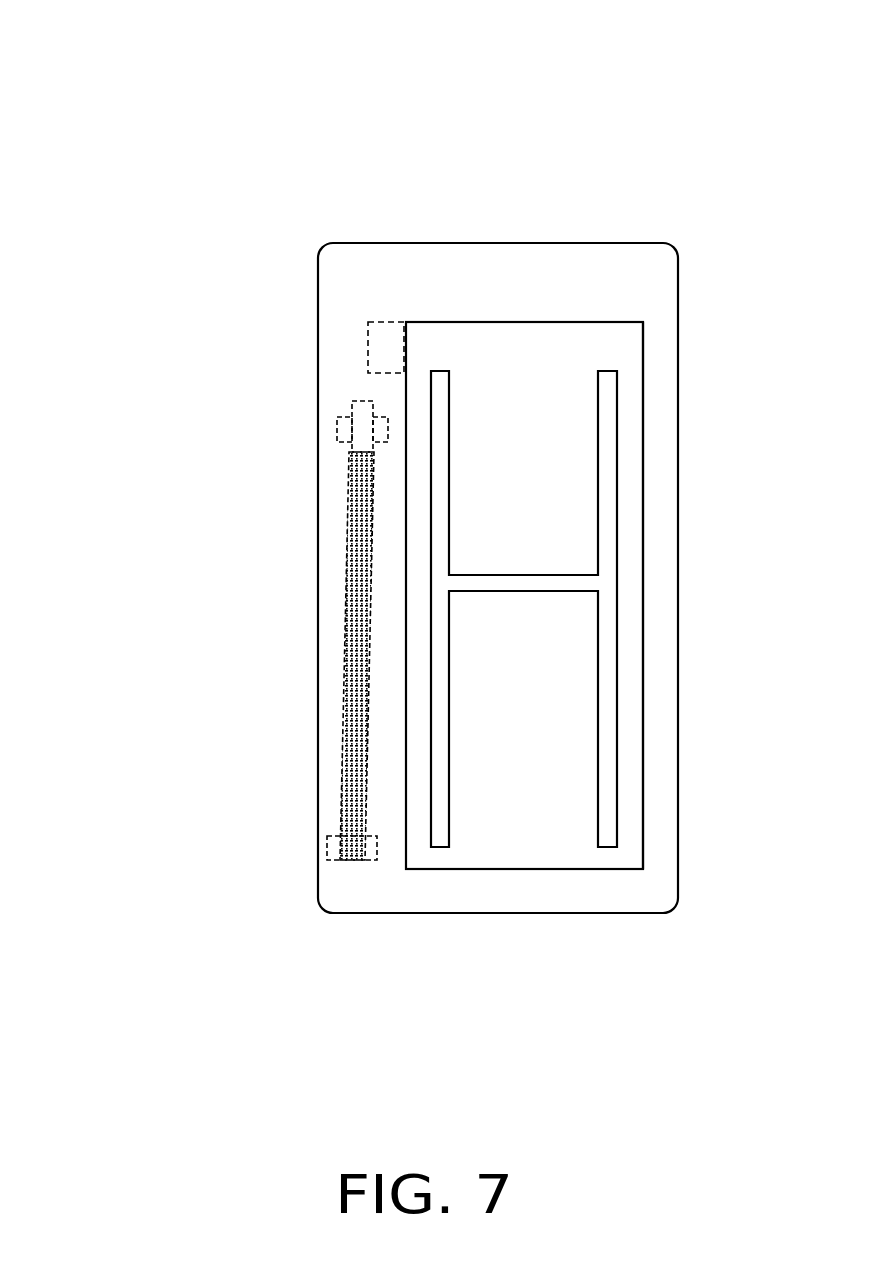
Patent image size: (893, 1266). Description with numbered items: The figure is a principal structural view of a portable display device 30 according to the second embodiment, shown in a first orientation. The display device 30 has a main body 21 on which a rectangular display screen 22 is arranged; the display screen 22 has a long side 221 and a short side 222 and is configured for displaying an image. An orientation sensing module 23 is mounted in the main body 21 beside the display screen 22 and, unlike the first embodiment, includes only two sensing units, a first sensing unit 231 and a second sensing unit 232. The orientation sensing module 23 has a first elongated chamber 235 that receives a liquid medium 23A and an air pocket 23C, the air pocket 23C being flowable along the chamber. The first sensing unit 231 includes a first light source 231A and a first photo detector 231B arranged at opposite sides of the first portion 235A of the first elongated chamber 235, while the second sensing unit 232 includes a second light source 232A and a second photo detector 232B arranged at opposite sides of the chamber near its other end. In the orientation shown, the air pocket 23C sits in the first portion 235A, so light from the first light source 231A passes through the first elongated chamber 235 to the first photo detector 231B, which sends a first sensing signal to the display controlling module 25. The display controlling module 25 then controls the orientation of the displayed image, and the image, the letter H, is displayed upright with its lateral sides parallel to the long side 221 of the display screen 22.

The display device 30 is at (203, 60).
The main body 21 is at (618, 268).
The display screen 22 is at (535, 840).
The long side 221 is at (643, 677).
The short side 222 is at (487, 869).
The display controlling module 25 is at (368, 345).
The orientation sensing module 23 is at (204, 632).
The first elongated chamber 235 is at (242, 656).
The liquid medium 23A is at (350, 680).
The first portion 235A is at (357, 397).
The air pocket 23C is at (360, 420).
The first sensing unit 231 is at (249, 502).
The first light source 231A is at (342, 430).
The first photo detector 231B is at (383, 442).
The second sensing unit 232 is at (246, 868).
The second light source 232A is at (332, 847).
The second photo detector 232B is at (374, 850).